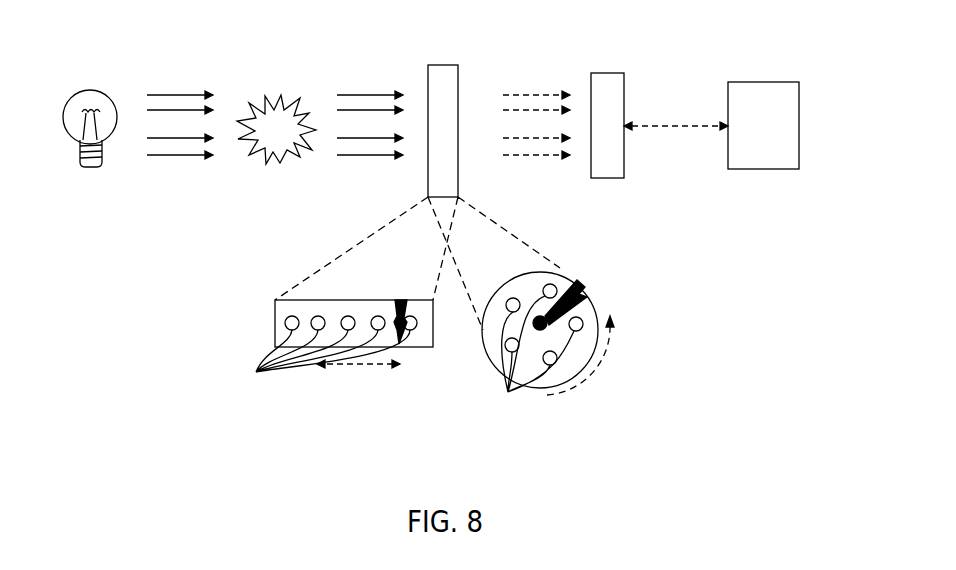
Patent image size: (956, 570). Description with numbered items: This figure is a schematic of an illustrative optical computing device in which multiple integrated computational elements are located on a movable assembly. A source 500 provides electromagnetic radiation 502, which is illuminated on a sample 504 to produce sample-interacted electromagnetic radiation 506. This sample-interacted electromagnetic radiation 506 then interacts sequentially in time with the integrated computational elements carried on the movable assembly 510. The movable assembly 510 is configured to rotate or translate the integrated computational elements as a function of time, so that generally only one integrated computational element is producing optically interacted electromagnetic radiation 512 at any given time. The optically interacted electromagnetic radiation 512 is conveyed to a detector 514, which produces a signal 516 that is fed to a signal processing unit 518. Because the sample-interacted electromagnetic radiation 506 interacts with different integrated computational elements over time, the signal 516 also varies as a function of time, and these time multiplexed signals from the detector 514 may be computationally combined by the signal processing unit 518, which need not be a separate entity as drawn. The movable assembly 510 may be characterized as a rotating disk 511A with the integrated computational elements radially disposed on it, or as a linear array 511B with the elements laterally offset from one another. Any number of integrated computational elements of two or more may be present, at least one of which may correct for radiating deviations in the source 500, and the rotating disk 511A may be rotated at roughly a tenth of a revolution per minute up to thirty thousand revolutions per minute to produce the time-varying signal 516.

The source 500 is at (91, 100).
The electromagnetic radiation 502 is at (168, 93).
The sample 504 is at (259, 110).
The sample-interacted electromagnetic radiation 506 is at (349, 95).
The movable assembly 510 is at (444, 70).
The rotating disk 511A is at (587, 303).
The linear array 511B is at (278, 313).
The optically interacted electromagnetic radiation 512 is at (518, 95).
The detector 514 is at (610, 80).
The signal 516 is at (665, 125).
The signal processing unit 518 is at (780, 137).